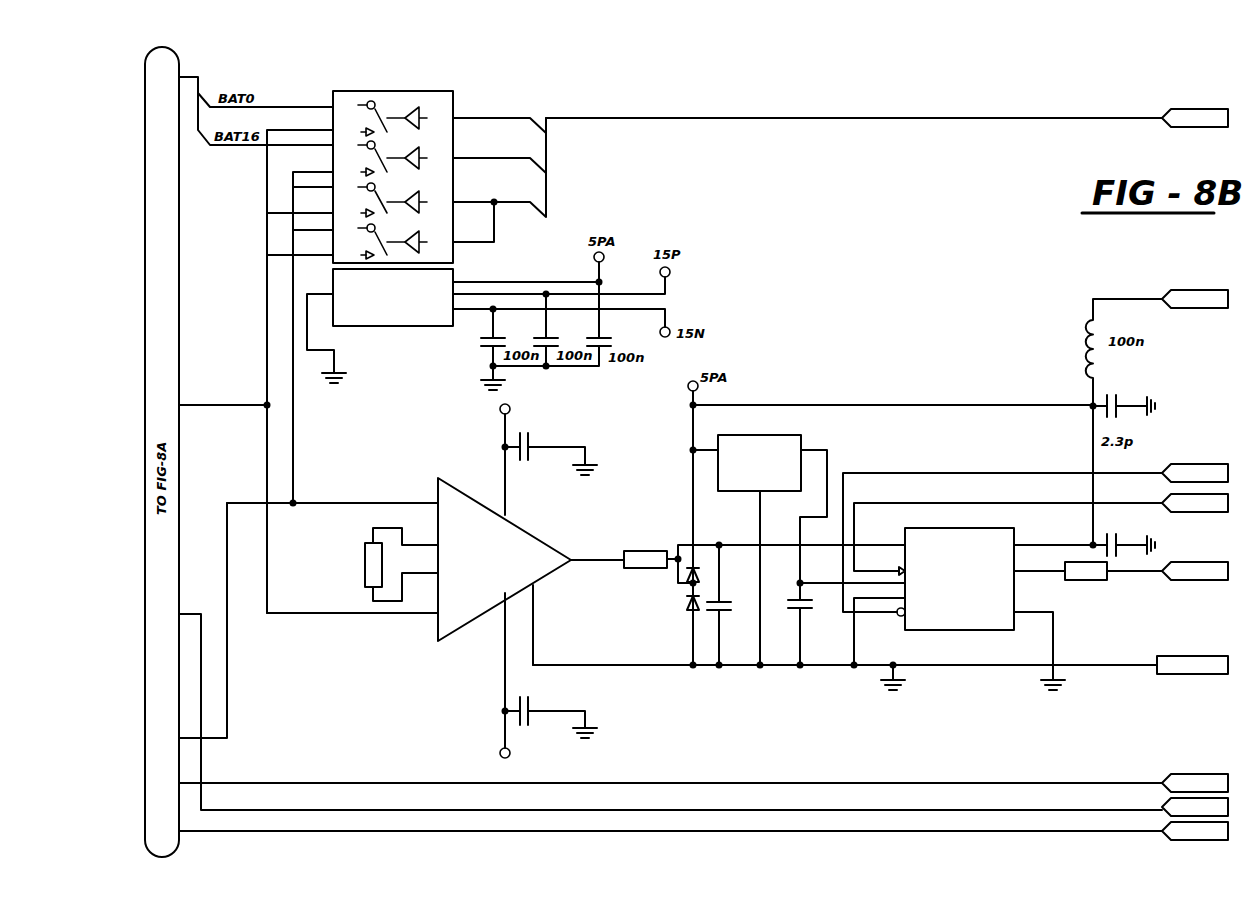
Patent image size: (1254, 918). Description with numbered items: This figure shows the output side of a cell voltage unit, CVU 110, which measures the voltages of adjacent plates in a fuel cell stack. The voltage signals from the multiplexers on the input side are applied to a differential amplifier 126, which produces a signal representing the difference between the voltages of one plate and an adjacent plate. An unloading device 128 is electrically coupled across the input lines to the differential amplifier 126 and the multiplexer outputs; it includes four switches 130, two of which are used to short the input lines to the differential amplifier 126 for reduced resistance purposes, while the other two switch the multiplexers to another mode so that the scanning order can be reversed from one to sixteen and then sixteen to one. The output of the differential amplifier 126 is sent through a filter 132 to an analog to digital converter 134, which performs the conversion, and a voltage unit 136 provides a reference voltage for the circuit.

The CVU 110 is at (882, 100).
The differential amplifier 126 is at (460, 633).
The unloading device 128 is at (455, 100).
The switches 130 is at (392, 97).
The filter 132 is at (1014, 596).
The analog to digital converter 134 is at (782, 667).
The voltage unit 136 is at (778, 435).